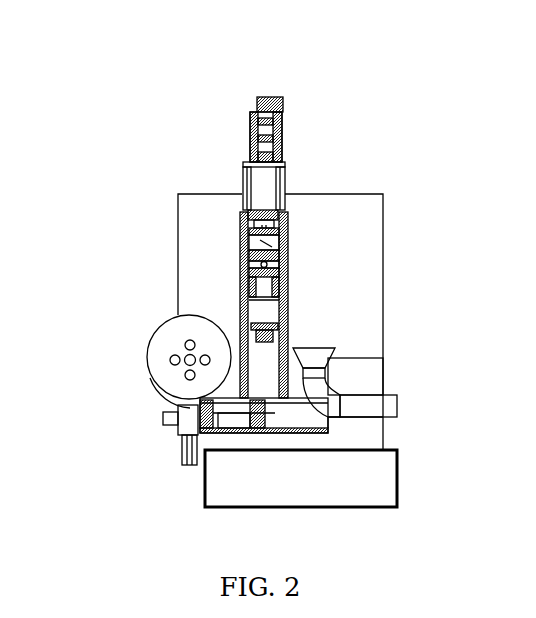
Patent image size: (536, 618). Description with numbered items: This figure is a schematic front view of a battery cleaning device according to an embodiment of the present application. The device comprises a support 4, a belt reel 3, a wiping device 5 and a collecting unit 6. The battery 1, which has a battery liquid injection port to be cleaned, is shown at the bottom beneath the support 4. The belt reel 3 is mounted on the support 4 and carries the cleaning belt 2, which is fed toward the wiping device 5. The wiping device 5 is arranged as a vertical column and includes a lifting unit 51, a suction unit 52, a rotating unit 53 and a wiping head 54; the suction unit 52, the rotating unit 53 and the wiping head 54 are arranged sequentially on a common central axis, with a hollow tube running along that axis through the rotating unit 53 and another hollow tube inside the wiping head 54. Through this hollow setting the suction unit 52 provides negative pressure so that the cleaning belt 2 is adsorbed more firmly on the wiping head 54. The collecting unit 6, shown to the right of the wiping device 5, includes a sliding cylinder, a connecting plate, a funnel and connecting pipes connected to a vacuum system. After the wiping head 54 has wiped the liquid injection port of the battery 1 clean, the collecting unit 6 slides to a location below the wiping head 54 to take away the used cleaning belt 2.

The battery 1 is at (218, 490).
The cleaning belt 2 is at (163, 419).
The belt reel 3 is at (172, 350).
The support 4 is at (200, 270).
The wiping device 5 is at (298, 156).
The lifting unit 51 is at (240, 229).
The suction unit 52 is at (245, 133).
The rotating unit 53 is at (280, 215).
The wiping head 54 is at (278, 338).
The collecting unit 6 is at (320, 347).